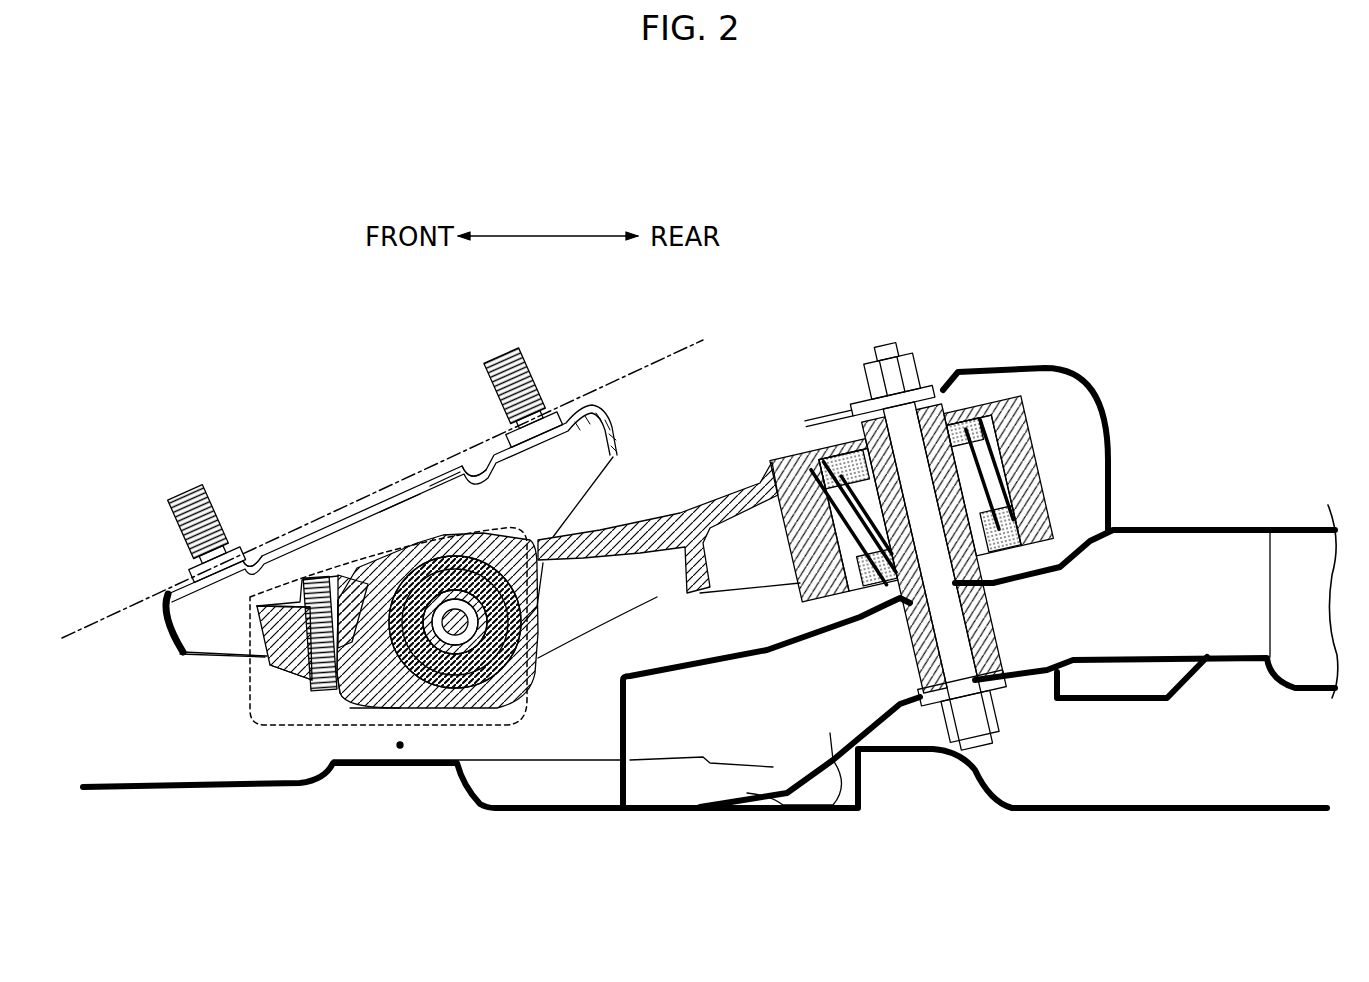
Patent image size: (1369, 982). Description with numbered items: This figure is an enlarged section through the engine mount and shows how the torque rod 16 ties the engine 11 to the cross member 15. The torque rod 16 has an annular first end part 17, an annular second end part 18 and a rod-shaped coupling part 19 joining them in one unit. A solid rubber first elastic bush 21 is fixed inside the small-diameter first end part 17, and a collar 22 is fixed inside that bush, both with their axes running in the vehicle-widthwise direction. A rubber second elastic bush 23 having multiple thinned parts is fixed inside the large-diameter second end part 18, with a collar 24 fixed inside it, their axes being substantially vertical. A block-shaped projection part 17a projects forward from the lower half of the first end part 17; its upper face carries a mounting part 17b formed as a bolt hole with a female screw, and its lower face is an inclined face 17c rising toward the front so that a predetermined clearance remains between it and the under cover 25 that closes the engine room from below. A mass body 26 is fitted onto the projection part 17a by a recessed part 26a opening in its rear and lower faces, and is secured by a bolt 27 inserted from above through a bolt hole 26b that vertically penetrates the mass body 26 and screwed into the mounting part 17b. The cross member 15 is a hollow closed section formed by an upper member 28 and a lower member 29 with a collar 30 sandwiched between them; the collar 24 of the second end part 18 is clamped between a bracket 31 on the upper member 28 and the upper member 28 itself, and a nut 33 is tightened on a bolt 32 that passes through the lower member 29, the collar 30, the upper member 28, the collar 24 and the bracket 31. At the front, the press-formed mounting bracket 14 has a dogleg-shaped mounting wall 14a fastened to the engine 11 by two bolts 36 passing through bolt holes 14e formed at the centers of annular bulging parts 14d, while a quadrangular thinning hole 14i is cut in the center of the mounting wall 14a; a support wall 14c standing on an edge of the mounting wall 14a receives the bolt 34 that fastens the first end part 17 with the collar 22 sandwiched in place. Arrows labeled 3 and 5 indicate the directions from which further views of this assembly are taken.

The section line of FIG. 3 is at (786, 300).
The view direction of FIG. 5 is at (514, 747).
The engine 11 is at (665, 367).
The mounting bracket 14 is at (408, 478).
The mounting wall 14a is at (392, 498).
The support wall 14c is at (273, 658).
The bulging part 14d is at (490, 448).
The bolt hole 14e is at (514, 428).
The thinning hole 14i is at (444, 486).
The cross member 15 is at (1205, 515).
The torque rod 16 is at (688, 503).
The first end part 17 is at (520, 696).
The projection part 17a is at (365, 700).
The mounting part 17b is at (338, 660).
The inclined face 17c is at (292, 672).
The second end part 18 is at (1022, 437).
The coupling part 19 is at (657, 600).
The first elastic bush 21 is at (445, 598).
The collar 22 is at (522, 627).
The second elastic bush 23 is at (1037, 455).
The collar 24 is at (835, 592).
The under cover 25 is at (292, 783).
The mass body 26 is at (262, 680).
The recessed part 26a is at (318, 682).
The bolt hole 26b is at (300, 650).
The bolt 27 is at (318, 577).
The upper member 28 is at (775, 650).
The lower member 29 is at (900, 712).
The collar 30 is at (978, 632).
The bracket 31 is at (1030, 428).
The bolt 32 is at (982, 722).
The nut 33 is at (897, 385).
The bolt 34 is at (452, 560).
The bolt 36 is at (512, 388).